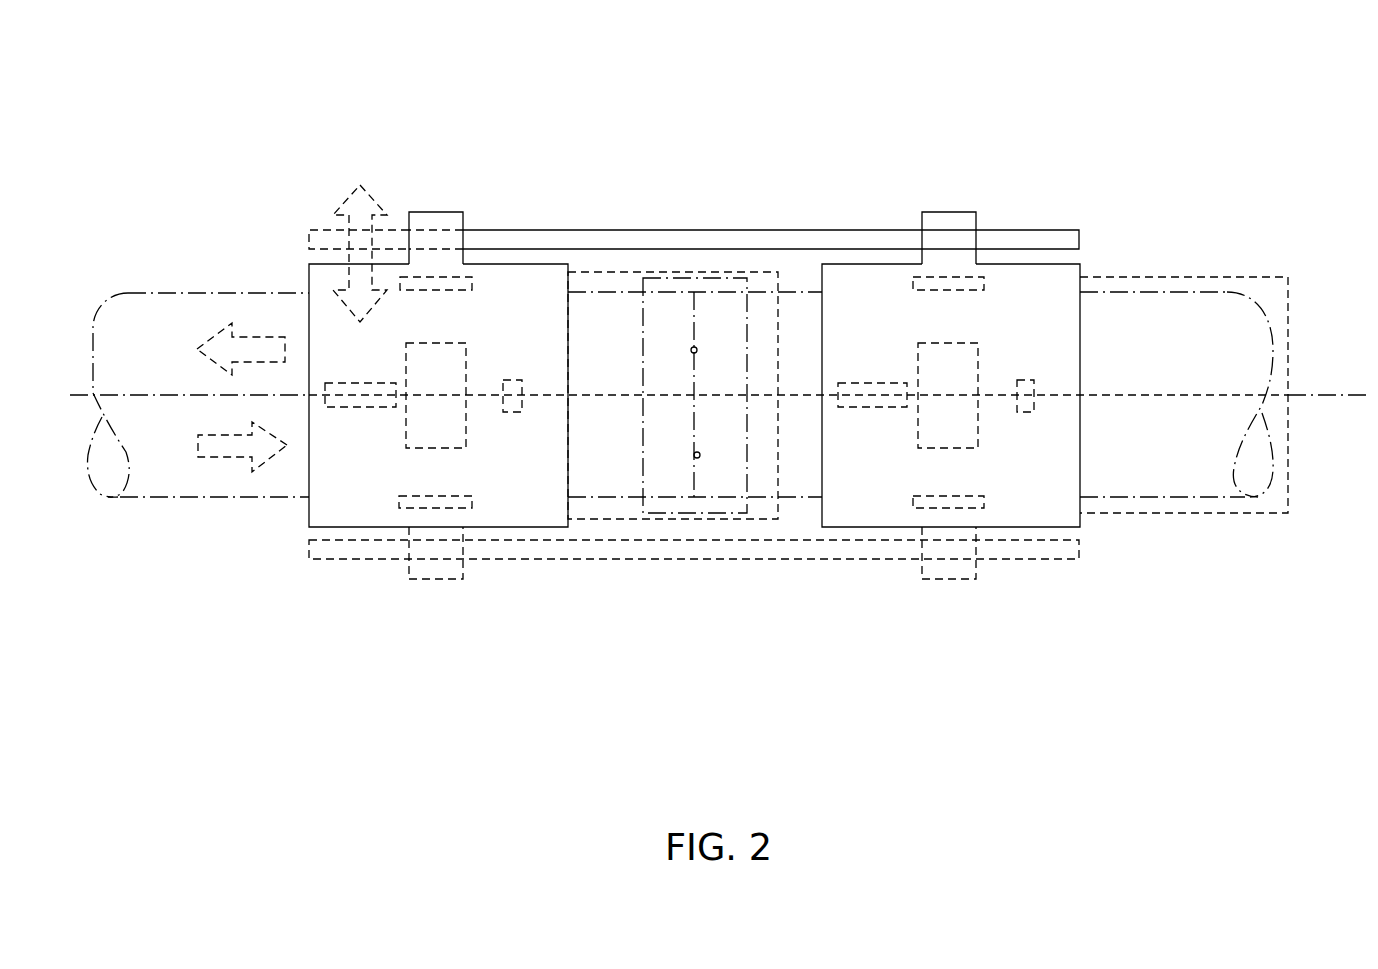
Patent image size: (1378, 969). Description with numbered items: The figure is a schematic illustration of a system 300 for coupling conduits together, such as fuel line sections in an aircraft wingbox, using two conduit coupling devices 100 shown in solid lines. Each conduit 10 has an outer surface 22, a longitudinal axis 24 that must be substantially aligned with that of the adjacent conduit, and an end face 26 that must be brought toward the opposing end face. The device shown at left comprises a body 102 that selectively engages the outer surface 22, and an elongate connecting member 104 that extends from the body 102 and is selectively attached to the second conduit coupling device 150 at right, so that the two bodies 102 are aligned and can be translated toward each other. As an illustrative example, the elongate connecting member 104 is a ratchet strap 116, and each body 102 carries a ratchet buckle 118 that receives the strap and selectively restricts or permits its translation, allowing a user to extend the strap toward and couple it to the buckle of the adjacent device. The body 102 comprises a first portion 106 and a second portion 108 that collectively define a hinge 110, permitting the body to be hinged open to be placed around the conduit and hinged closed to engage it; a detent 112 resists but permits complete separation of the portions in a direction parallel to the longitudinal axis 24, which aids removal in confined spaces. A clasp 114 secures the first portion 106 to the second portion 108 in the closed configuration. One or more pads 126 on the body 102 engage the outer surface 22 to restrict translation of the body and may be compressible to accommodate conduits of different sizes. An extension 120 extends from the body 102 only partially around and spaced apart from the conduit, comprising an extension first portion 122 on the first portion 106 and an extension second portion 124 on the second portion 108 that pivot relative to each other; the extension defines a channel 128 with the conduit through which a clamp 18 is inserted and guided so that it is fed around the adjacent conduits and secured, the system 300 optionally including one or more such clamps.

The system 300 is at (1060, 95).
The conduit 10 is at (195, 290).
The outer surface 22 is at (252, 290).
The longitudinal axis 24 is at (183, 395).
The clamp 18 is at (672, 278).
The end face 26 is at (697, 350).
The conduit coupling device 100 is at (548, 177).
The second conduit coupling device 150 is at (940, 182).
The body 102 is at (535, 263).
The elongate connecting member 104 is at (792, 228).
The ratchet strap 116 is at (630, 228).
The ratchet buckle 118 is at (432, 212).
The extension 120 is at (720, 267).
The extension first portion 122 is at (778, 315).
The extension second portion 124 is at (778, 430).
The pad 126 is at (448, 292).
The channel 128 is at (785, 277).
The first portion 106 is at (568, 307).
The second portion 108 is at (568, 425).
The hinge 110 is at (385, 383).
The detent 112 is at (513, 380).
The clasp 114 is at (453, 343).